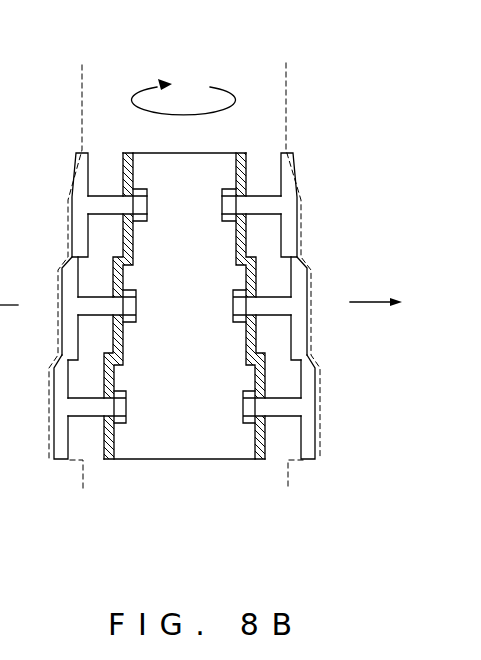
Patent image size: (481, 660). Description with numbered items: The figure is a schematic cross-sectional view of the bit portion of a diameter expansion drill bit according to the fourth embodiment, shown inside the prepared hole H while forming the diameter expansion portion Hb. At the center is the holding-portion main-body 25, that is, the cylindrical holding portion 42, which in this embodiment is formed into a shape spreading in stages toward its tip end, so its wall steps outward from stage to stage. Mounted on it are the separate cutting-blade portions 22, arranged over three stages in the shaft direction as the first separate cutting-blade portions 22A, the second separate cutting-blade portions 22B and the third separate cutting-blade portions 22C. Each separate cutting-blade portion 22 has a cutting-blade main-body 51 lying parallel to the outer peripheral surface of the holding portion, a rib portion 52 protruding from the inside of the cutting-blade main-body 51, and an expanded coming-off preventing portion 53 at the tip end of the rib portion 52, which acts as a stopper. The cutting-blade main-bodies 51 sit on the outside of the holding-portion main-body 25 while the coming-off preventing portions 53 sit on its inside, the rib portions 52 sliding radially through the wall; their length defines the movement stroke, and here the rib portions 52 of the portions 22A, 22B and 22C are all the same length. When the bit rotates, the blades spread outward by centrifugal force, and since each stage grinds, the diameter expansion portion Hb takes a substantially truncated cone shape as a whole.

The separate cutting-blade portion 22 is at (232, 295).
The first separate cutting-blade portion 22A is at (232, 194).
The second separate cutting-blade portion 22B is at (323, 268).
The third separate cutting-blade portion 22C is at (331, 369).
The cutting-blade main-body 51 is at (77, 204).
The rib portion 52 is at (98, 204).
The coming-off preventing portion 53 is at (145, 208).
The holding-portion main-body 25 is at (261, 460).
The cylindrical holding portion 42 is at (195, 350).
The prepared hole H is at (82, 103).
The diameter expansion portion Hb is at (62, 462).